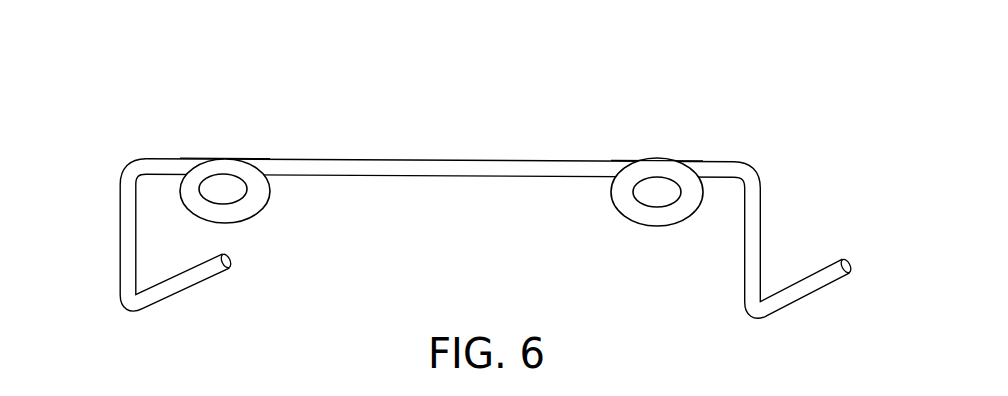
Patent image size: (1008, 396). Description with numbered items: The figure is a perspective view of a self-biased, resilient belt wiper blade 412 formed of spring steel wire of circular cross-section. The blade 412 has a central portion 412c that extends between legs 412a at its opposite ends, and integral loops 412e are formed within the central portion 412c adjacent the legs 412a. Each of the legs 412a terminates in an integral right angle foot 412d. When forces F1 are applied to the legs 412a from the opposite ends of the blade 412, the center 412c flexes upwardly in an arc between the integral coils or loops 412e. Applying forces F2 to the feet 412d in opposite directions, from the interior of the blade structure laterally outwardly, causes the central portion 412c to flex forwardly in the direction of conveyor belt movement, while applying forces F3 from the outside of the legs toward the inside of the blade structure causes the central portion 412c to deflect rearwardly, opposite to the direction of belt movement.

The self-biased, resilient belt wiper blade 412 is at (461, 226).
The legs 412a is at (120, 212).
The central portion 412c is at (425, 160).
The right angle feet 412d is at (191, 287).
The integral loops 412e is at (262, 210).
The forces F1 is at (810, 237).
The forces F2 is at (224, 280).
The forces F3 is at (895, 300).